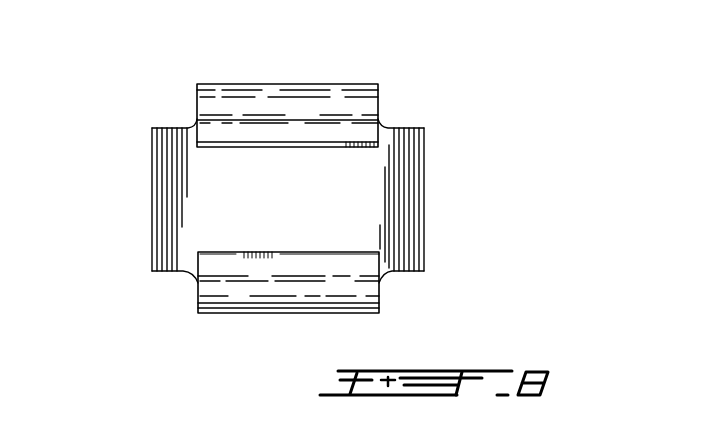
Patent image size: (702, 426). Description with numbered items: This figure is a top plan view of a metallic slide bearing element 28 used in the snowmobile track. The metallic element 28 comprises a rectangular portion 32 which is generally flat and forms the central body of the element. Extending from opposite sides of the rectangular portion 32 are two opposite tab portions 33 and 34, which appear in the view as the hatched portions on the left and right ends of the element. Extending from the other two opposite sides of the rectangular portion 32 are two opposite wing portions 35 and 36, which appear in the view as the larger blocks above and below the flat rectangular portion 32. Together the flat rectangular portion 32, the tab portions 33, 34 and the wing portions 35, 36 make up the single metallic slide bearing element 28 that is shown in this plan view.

The metallic element 28 is at (445, 232).
The rectangular portion 32 is at (333, 195).
The tab portion 33 is at (425, 203).
The tab portion 34 is at (152, 180).
The wing portion 35 is at (253, 302).
The wing portion 36 is at (308, 99).